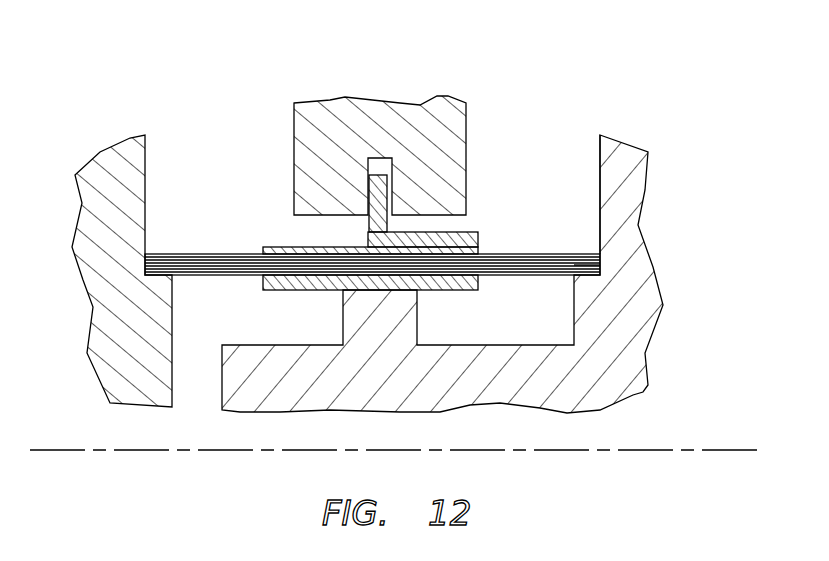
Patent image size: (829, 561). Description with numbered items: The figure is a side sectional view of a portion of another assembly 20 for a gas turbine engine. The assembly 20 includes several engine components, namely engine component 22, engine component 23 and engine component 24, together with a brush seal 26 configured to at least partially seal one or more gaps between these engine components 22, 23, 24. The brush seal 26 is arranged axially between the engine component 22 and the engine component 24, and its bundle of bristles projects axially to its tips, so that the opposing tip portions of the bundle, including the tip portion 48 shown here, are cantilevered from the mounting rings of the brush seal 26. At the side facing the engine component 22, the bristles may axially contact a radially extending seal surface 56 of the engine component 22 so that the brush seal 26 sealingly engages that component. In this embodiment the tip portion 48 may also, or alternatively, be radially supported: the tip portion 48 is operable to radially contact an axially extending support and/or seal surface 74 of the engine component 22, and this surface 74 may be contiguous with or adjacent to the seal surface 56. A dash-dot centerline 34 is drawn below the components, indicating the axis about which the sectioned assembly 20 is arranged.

The assembly 20 is at (583, 92).
The engine component 22 is at (650, 175).
The engine component 23 is at (440, 92).
The engine component 24 is at (83, 325).
The brush seal 26 is at (252, 237).
The central axis 34 is at (724, 448).
The tip portion 48 is at (578, 248).
The seal surface 56 is at (600, 222).
The support and/or seal surface 74 is at (593, 265).